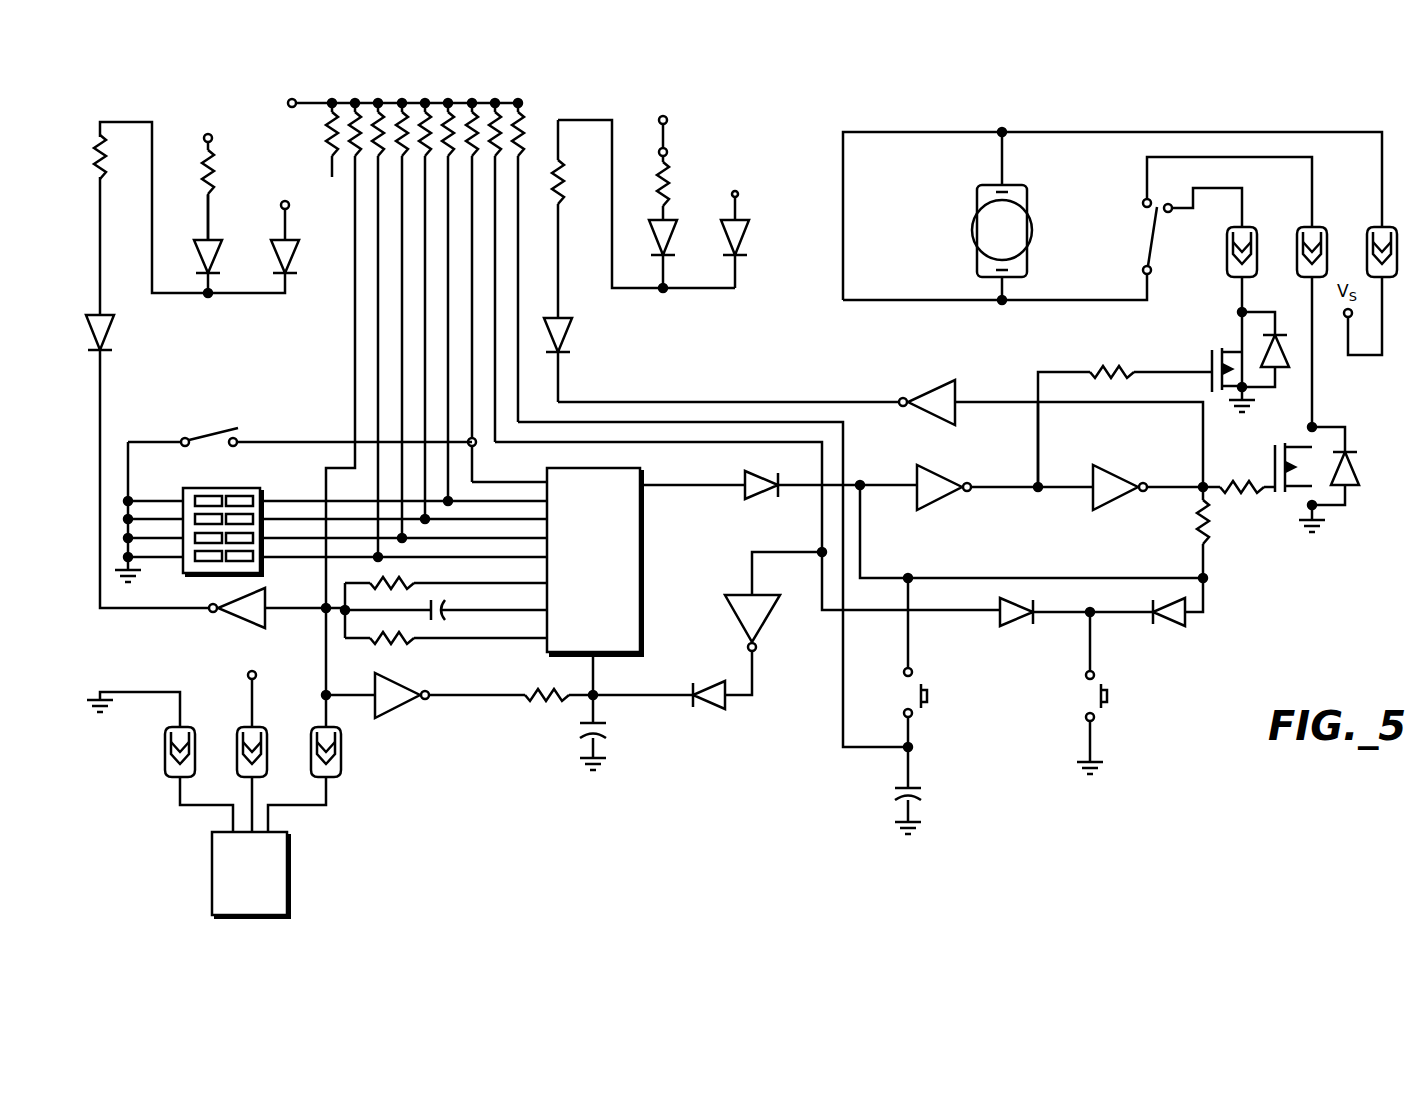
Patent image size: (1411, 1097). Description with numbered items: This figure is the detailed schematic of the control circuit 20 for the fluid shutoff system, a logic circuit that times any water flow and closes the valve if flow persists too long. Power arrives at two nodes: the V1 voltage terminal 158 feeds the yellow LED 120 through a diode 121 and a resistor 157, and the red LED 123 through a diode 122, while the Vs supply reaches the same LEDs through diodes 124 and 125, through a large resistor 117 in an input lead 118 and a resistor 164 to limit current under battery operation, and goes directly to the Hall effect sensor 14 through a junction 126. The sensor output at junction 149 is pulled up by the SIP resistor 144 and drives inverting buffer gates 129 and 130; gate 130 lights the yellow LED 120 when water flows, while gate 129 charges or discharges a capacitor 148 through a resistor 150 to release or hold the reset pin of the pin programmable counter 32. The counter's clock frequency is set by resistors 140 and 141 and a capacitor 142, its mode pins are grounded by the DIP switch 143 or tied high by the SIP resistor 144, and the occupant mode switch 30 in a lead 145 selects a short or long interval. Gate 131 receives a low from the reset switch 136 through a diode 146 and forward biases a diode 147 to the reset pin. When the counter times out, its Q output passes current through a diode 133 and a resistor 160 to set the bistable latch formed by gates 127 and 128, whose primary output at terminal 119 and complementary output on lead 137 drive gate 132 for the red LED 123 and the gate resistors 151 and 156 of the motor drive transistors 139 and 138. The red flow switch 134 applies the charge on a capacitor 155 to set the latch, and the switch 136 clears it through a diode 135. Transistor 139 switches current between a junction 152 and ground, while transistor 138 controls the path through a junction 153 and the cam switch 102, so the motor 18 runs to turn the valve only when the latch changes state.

The Hall effect sensor 14 is at (290, 872).
The motor 18 is at (1035, 218).
The control circuit 20 is at (776, 178).
The occupant mode switch 30 is at (240, 428).
The CMOS oscillator and pin programmable counter 32 is at (594, 561).
The cam switch 102 is at (1151, 274).
The resistor 117 is at (216, 170).
The input lead 118 is at (210, 236).
The terminal 119 is at (1200, 484).
The yellow LED 120 is at (112, 330).
The diode 121 is at (291, 258).
The diode 122 is at (741, 225).
The red LED 123 is at (566, 335).
The diode 124 is at (213, 258).
The diode 125 is at (672, 225).
The junction 126 is at (258, 730).
The CMOS inverting buffer gate 127 is at (948, 470).
The CMOS inverting buffer gate 128 is at (1105, 465).
The CMOS inverting buffer gate 129 is at (392, 716).
The CMOS inverting buffer gate 130 is at (246, 628).
The CMOS inverting buffer gate 131 is at (740, 628).
The CMOS inverting buffer gate 132 is at (940, 380).
The diode 133 is at (755, 500).
The red flow switch 134 is at (930, 697).
The diode 135 is at (1170, 628).
The reset switch 136 is at (1112, 700).
The lead 137 is at (1040, 455).
The motor drive transistor 138 is at (1210, 358).
The motor drive transistor 139 is at (1278, 498).
The resistor 140 is at (410, 586).
The resistor 141 is at (405, 646).
The capacitor 142 is at (446, 616).
The dual-in-line switch 143 is at (228, 488).
The SIP resistor 144 is at (403, 103).
The lead 145 is at (290, 440).
The diode 146 is at (1010, 626).
The diode 147 is at (712, 712).
The capacitor 148 is at (605, 736).
The junction 149 is at (338, 780).
The resistor 150 is at (558, 706).
The gate resistor 151 is at (1262, 480).
The junction 152 is at (1298, 238).
The junction 153 is at (1228, 250).
The capacitor 155 is at (925, 796).
The gate resistor 156 is at (1098, 365).
The resistor 157 is at (103, 172).
The voltage terminal V1 158 is at (290, 200).
The resistor 160 is at (1197, 533).
The resistor 164 is at (669, 160).